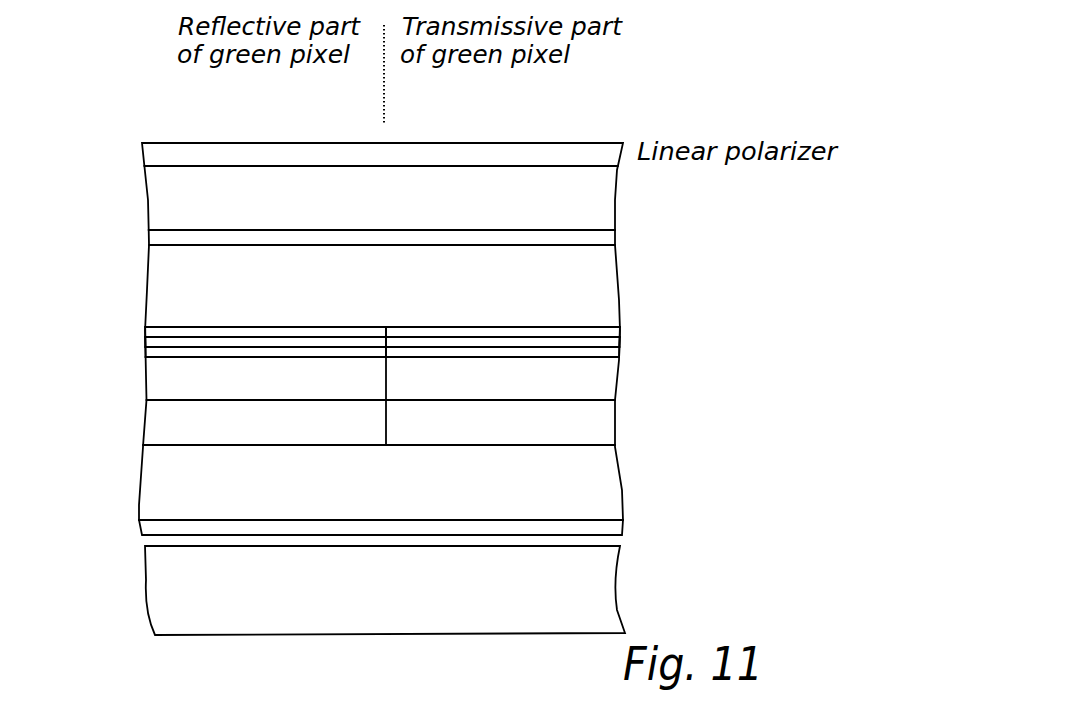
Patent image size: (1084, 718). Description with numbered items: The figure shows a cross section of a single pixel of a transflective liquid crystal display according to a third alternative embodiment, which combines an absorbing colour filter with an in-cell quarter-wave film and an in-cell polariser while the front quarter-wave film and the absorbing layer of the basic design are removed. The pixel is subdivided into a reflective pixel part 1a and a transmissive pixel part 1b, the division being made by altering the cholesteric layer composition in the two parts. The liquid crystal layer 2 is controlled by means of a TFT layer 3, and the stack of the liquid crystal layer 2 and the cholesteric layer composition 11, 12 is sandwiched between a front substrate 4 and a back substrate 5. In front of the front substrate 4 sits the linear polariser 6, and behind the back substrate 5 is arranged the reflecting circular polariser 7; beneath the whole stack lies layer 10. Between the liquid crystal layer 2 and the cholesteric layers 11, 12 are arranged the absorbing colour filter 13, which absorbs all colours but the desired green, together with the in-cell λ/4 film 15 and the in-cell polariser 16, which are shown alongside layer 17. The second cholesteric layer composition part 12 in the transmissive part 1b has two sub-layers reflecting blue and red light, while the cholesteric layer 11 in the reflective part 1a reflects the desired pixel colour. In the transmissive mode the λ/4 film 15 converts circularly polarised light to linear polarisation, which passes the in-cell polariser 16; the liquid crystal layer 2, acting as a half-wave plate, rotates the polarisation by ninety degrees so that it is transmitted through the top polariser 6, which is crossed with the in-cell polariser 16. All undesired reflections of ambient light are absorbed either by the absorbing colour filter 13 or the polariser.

The reflective pixel part 1a is at (276, 134).
The transmissive pixel part 1b is at (537, 134).
The liquid crystal layer 2 is at (148, 270).
The TFT layer 3 is at (149, 237).
The front substrate 4 is at (147, 187).
The back substrate 5 is at (140, 495).
The linear polariser 6 is at (142, 153).
The reflecting circular polariser 7 is at (142, 532).
The backlight 10 is at (145, 588).
The cholesteric layer composition 11 is at (286, 357).
The second cholesteric layer composition part 12 is at (518, 357).
The absorbing colour filter 13 is at (620, 348).
The in-cell λ/4 film 15 is at (620, 343).
The in-cell polariser 16 is at (382, 342).
The electrode layer 17 is at (620, 333).